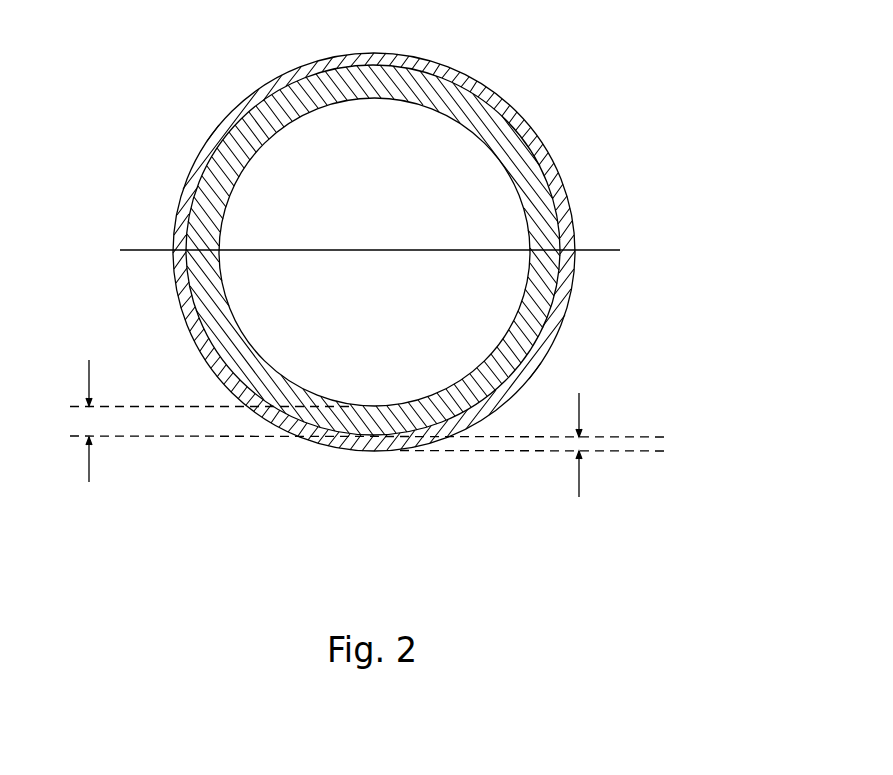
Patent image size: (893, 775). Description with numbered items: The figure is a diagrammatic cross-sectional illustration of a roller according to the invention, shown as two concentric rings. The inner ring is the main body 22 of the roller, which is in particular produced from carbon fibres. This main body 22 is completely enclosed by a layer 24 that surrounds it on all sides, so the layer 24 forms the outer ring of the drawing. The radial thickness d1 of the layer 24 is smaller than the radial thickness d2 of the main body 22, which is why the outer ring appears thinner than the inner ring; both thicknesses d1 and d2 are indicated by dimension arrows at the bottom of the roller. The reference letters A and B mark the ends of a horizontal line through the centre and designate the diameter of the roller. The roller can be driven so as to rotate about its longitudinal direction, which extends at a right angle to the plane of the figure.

The main body 22 is at (520, 153).
The layer 24 is at (492, 88).
The radial thickness of the layer d1 is at (532, 445).
The radial thickness of the main body d2 is at (235, 421).
The diameter reference letter A is at (223, 232).
The diameter reference letter B is at (507, 232).